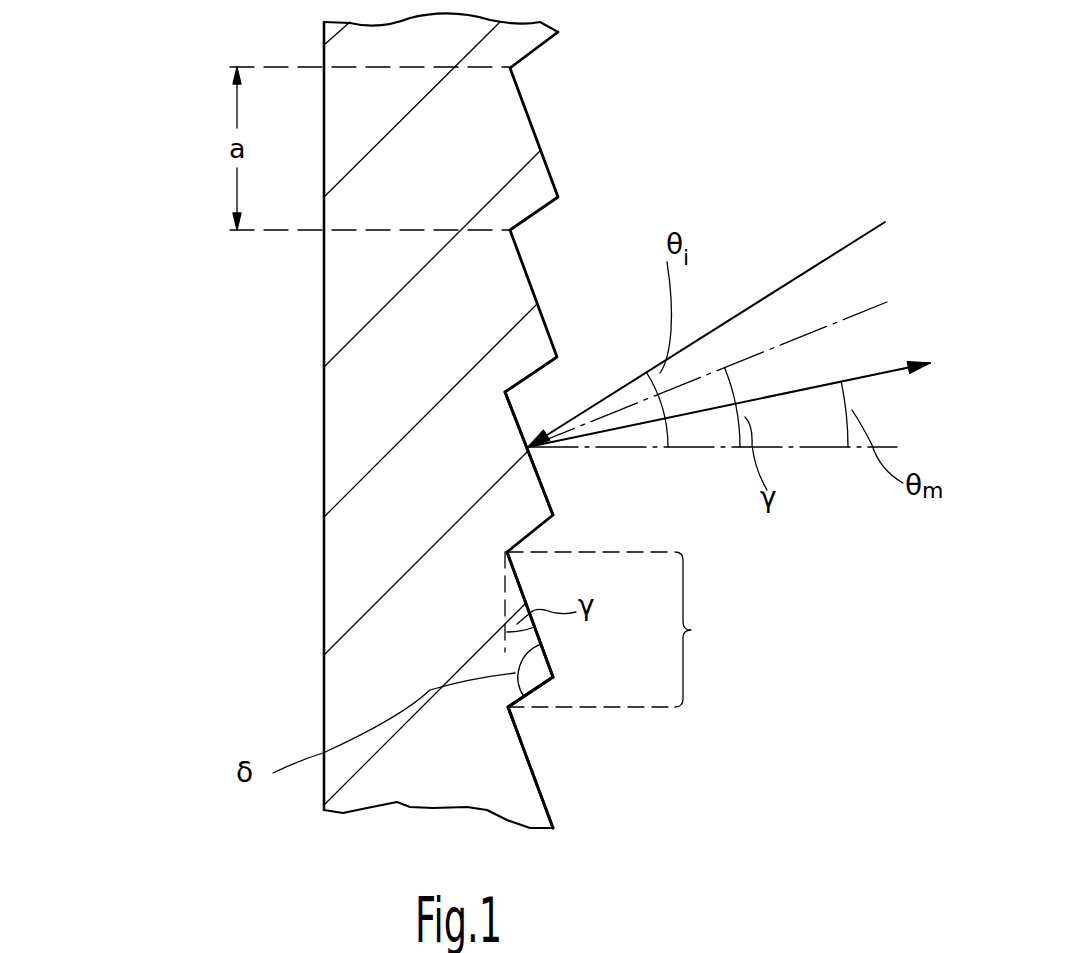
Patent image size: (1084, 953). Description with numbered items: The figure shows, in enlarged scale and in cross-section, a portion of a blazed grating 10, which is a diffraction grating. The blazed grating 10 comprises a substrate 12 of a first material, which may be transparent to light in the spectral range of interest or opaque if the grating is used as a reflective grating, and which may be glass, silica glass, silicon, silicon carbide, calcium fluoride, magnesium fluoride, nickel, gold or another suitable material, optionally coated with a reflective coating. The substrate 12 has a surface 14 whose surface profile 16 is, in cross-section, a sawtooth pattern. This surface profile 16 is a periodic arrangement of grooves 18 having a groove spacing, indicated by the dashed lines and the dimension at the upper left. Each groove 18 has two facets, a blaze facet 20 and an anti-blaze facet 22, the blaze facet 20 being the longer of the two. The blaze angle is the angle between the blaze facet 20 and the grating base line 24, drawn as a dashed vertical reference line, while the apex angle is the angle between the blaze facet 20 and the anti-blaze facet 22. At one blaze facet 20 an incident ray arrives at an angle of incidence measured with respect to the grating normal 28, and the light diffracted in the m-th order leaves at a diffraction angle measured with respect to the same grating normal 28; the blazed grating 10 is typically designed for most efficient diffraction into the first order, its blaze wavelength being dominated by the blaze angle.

The blazed grating 10 is at (172, 337).
The substrate 12 is at (365, 588).
The surface 14 is at (540, 790).
The surface profile 16 is at (541, 481).
The groove 18 is at (692, 630).
The blaze facet 20 is at (536, 629).
The anti-blaze facet 22 is at (508, 706).
The grating base line 24 is at (503, 594).
The grating normal 28 is at (820, 450).